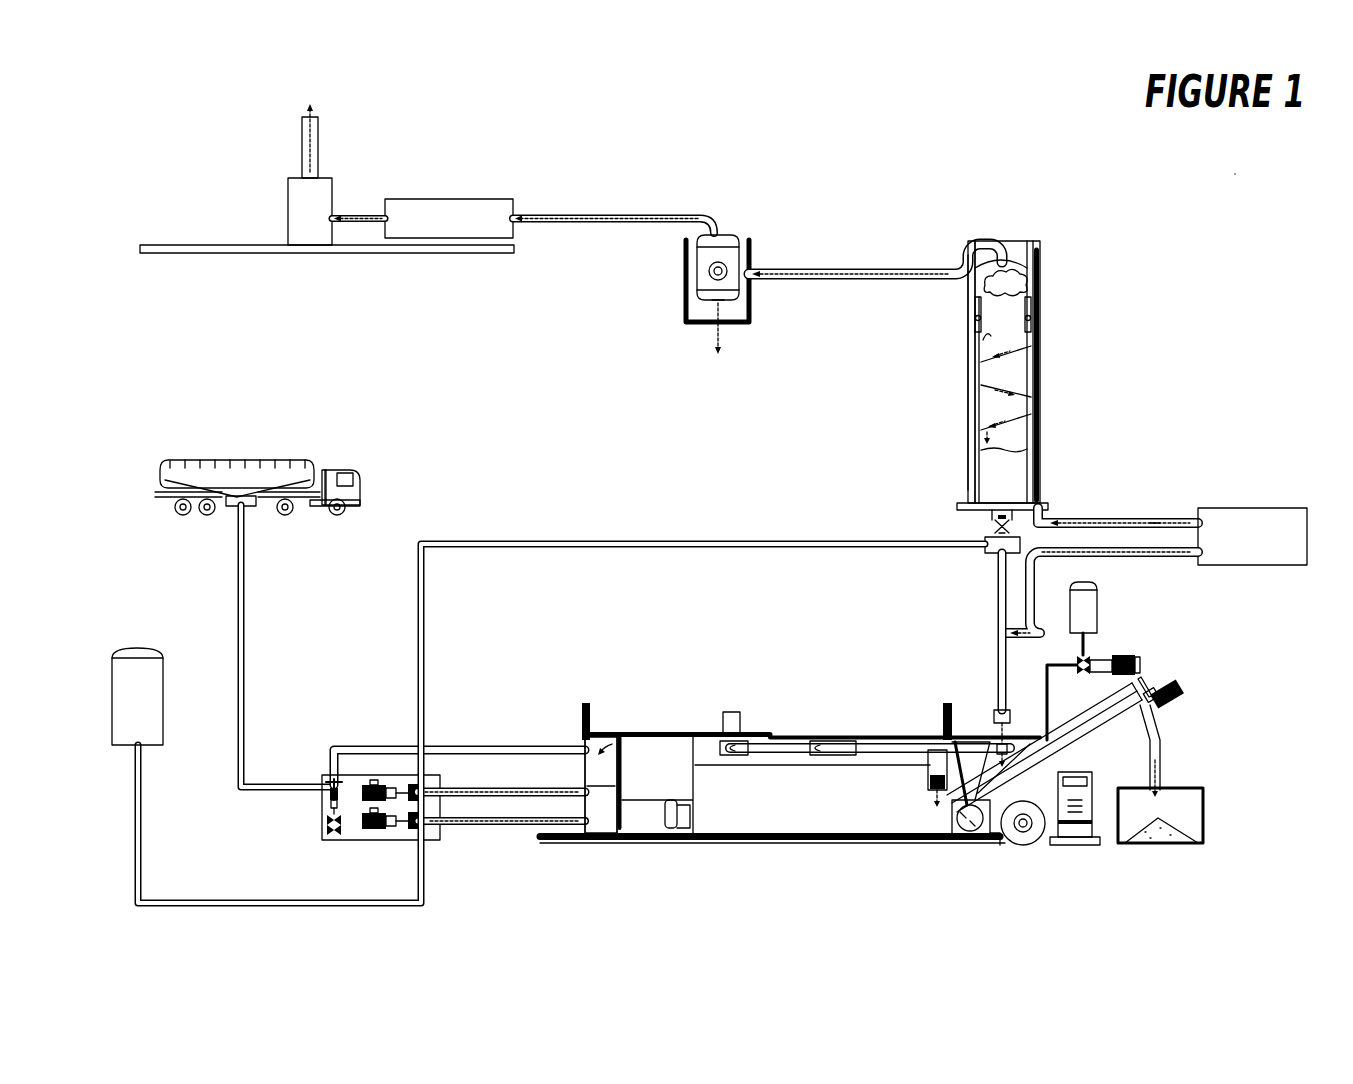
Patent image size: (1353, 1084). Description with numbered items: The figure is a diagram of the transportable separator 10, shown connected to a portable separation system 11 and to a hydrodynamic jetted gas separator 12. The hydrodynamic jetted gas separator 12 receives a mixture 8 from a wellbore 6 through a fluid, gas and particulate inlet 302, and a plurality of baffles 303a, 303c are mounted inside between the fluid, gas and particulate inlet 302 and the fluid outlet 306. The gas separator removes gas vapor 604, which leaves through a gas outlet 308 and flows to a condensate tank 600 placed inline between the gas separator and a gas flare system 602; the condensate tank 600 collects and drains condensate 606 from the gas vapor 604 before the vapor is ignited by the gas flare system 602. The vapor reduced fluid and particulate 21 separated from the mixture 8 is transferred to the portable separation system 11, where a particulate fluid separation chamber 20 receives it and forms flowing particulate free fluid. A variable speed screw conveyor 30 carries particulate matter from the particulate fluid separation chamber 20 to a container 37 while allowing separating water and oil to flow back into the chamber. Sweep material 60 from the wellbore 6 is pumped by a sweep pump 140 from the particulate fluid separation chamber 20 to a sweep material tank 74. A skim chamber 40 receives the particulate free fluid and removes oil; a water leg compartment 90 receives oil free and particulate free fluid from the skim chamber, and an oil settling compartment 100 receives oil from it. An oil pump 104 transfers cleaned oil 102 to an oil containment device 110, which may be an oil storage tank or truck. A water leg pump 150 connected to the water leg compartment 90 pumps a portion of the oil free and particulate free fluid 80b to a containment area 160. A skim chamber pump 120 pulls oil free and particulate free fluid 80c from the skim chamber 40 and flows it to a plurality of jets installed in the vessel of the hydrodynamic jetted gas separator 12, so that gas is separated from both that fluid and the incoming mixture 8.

The transportable separator 10 is at (1236, 173).
The wellbore 6 is at (1252, 508).
The mixture 8 is at (1160, 520).
The portable separation system 11 is at (621, 676).
The hydrodynamic jetted gas separator 12 is at (927, 427).
The particulate fluid separation chamber 20 is at (988, 733).
The vapor reduced fluid and particulate 21 is at (997, 592).
The variable speed screw conveyor 30 is at (1088, 740).
The container 37 is at (1203, 817).
The skim chamber 40 is at (822, 812).
The sweep material 60 is at (1152, 558).
The sweep material tank 74 is at (1100, 612).
The oil free and particulate free fluid 80b is at (135, 826).
The oil free and particulate free fluid 80c is at (690, 541).
The water leg compartment 90 is at (645, 812).
The oil settling compartment 100 is at (600, 812).
The cleaned oil 102 is at (233, 626).
The oil pump 104 is at (326, 815).
The oil containment device 110 is at (237, 465).
The skim chamber pump 120 is at (408, 784).
The sweep pump 140 is at (1092, 655).
The water leg pump 150 is at (405, 833).
The containment area 160 is at (163, 705).
The fluid, gas and particulate inlet 302 is at (1106, 520).
The baffle 303a is at (1012, 355).
The baffle 303c is at (1012, 422).
The fluid outlet 306 is at (995, 520).
The gas outlet 308 is at (1002, 262).
The condensate tank 600 is at (695, 270).
The gas flare system 602 is at (288, 205).
The gas vapor 604 is at (870, 270).
The condensate 606 is at (720, 338).